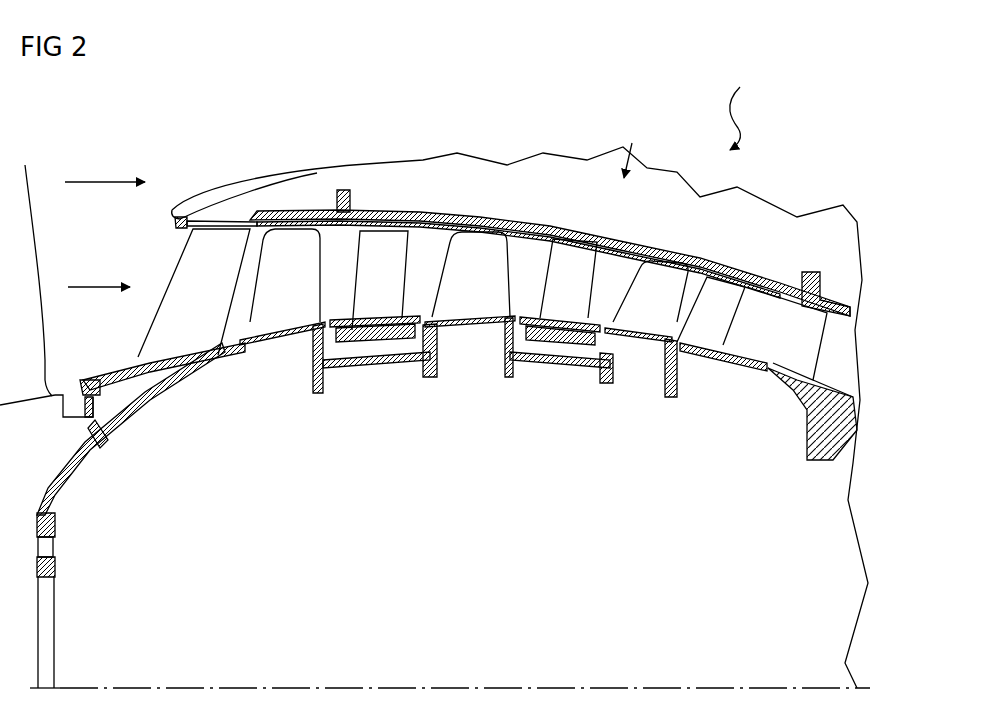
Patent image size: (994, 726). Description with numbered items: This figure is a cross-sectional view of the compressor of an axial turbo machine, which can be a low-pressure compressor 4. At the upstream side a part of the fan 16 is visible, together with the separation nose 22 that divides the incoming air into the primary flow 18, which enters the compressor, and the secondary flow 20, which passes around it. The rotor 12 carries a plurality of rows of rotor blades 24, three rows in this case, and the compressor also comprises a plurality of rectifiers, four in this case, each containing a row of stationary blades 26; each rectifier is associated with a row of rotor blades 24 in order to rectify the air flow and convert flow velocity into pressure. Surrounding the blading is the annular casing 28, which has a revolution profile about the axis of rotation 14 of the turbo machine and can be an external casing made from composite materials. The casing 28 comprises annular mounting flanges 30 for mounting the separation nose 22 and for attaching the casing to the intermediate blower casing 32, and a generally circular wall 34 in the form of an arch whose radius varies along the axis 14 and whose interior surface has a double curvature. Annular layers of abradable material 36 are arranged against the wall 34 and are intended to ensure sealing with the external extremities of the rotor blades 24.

The low-pressure compressor 4 is at (743, 104).
The rotor 12 is at (56, 530).
The axis of rotation 14 is at (541, 687).
The fan 16 is at (34, 297).
The primary flow 18 is at (99, 269).
The secondary flow 20 is at (105, 164).
The separation nose 22 is at (165, 224).
The rotor blades 24 is at (469, 275).
The stationary blades 26 is at (441, 293).
The casing 28 is at (638, 147).
The mounting flanges 30 is at (347, 189).
The intermediate blower casing 32 is at (806, 445).
The wall 34 is at (556, 223).
The abradable material 36 is at (478, 220).